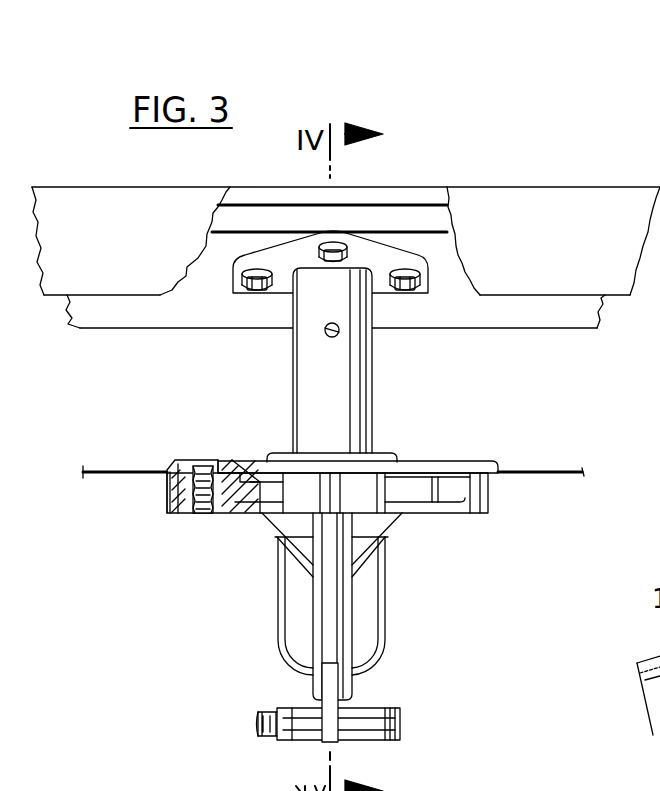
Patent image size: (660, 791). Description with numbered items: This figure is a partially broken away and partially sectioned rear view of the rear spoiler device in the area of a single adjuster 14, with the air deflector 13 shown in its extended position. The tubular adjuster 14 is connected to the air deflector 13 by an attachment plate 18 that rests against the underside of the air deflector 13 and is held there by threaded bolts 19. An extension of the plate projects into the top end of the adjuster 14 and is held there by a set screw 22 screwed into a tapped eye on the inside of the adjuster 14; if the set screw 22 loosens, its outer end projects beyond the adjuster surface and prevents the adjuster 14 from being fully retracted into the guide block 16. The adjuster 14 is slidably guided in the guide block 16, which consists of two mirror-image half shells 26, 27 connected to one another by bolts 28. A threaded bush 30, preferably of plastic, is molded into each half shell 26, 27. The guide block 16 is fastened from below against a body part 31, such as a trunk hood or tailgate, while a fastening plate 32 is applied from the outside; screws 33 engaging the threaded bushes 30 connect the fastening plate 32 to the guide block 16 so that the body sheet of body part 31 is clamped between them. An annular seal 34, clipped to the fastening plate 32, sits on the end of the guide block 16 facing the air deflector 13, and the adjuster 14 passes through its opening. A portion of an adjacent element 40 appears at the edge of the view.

The air deflector 13 is at (532, 220).
The adjuster 14 is at (310, 388).
The guide block 16 is at (262, 634).
The attachment plate 18 is at (380, 283).
The threaded bolts 19 is at (257, 288).
The set screw 22 is at (324, 333).
The half shell 26 is at (288, 592).
The half shell 27 is at (375, 592).
The bolts 28 is at (393, 718).
The threaded bush 30 is at (180, 495).
The body part 31 is at (536, 472).
The fastening plate 32 is at (450, 465).
The screws 33 is at (201, 466).
The annular seal 34 is at (385, 452).
The member 40 is at (659, 645).